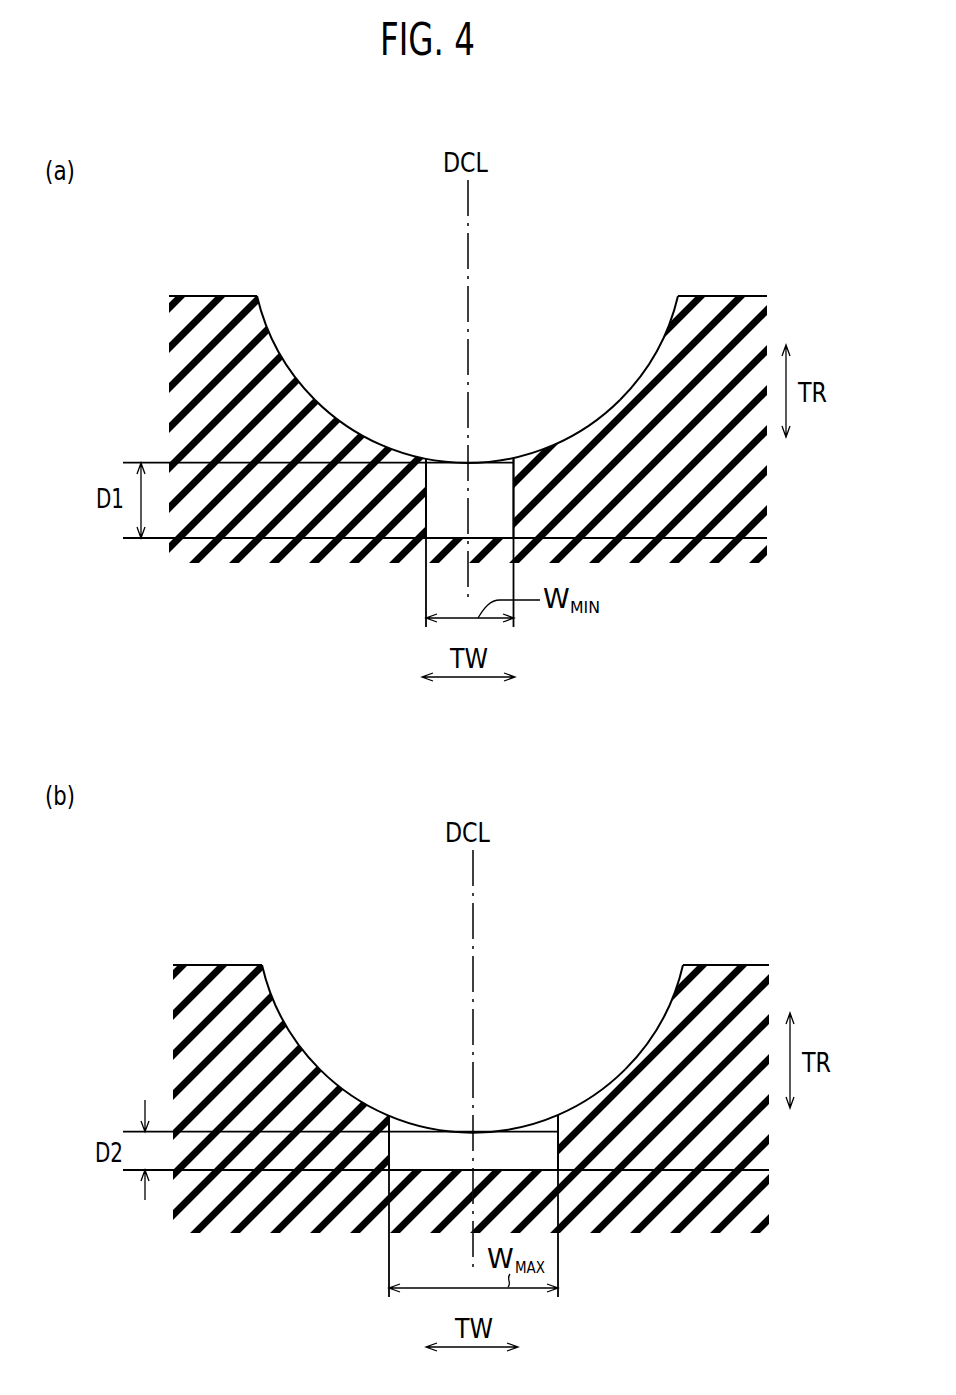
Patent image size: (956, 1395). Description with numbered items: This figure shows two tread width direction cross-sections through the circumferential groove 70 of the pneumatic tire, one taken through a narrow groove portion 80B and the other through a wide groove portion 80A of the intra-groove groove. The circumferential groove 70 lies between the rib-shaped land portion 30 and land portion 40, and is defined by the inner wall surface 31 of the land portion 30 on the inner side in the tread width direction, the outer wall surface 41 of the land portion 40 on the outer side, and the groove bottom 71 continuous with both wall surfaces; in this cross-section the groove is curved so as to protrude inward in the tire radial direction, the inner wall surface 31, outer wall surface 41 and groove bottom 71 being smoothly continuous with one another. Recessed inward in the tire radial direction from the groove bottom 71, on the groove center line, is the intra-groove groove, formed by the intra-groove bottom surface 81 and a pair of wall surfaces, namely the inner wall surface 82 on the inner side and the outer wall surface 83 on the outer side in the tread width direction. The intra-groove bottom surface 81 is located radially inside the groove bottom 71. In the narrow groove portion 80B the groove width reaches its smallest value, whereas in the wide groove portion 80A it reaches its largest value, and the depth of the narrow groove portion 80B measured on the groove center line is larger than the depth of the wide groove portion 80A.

The land portion 30 is at (193, 305).
The inner wall surface 31 is at (263, 332).
The land portion 40 is at (745, 305).
The outer wall surface 41 is at (673, 325).
The circumferential groove 70 is at (470, 660).
The groove bottom 71 is at (348, 427).
The wide groove portion 80A is at (520, 1050).
The narrow groove portion 80B is at (516, 380).
The intra-groove bottom surface 81 is at (438, 545).
The inner wall surface 82 is at (427, 483).
The outer wall surface 83 is at (513, 483).